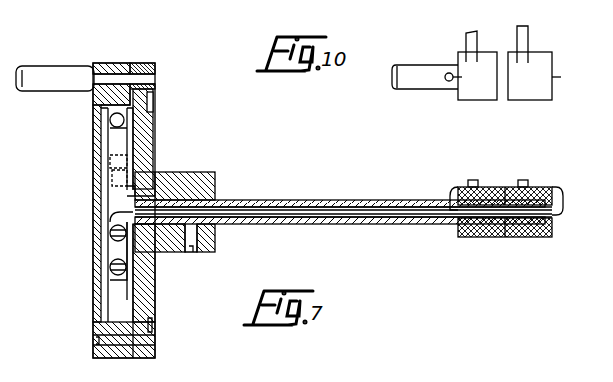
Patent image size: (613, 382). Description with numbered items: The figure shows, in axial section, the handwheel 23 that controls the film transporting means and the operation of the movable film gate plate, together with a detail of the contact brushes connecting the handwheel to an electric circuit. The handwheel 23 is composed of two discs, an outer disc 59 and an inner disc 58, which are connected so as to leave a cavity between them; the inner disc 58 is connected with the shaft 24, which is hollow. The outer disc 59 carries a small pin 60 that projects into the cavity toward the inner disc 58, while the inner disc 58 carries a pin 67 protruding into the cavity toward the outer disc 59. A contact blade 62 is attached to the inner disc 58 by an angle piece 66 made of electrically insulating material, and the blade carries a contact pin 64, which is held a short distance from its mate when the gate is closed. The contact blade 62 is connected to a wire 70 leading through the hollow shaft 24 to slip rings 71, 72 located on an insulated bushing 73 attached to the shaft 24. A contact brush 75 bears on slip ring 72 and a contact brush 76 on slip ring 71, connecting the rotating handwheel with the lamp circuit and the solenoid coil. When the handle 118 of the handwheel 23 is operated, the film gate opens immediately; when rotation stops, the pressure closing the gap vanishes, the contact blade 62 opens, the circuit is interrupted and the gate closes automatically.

In FIG. 7, the handle 118 is at (52, 73).
In FIG. 7, the handwheel 23 is at (92, 128).
In FIG. 7, the shaft 24 is at (343, 216).
In FIG. 10, the shaft 24 is at (424, 85).
In FIG. 7, the inner disc 58 is at (155, 276).
In FIG. 7, the outer disc 59 is at (100, 292).
In FIG. 7, the pin 60 is at (107, 165).
In FIG. 7, the contact blade 62 is at (143, 138).
In FIG. 7, the contact pin 64 is at (124, 118).
In FIG. 7, the angle piece 66 is at (110, 250).
In FIG. 7, the pin 67 is at (150, 180).
In FIG. 7, the wire 70 is at (334, 200).
In FIG. 7, the slip ring 71 is at (486, 190).
In FIG. 10, the slip ring 71 is at (490, 97).
In FIG. 7, the slip ring 72 is at (542, 190).
In FIG. 10, the slip ring 72 is at (543, 97).
In FIG. 7, the insulated bushing 73 is at (553, 222).
In FIG. 7, the contact brush 75 is at (523, 180).
In FIG. 10, the contact brush 75 is at (527, 35).
In FIG. 7, the contact brush 76 is at (473, 180).
In FIG. 10, the contact brush 76 is at (470, 44).